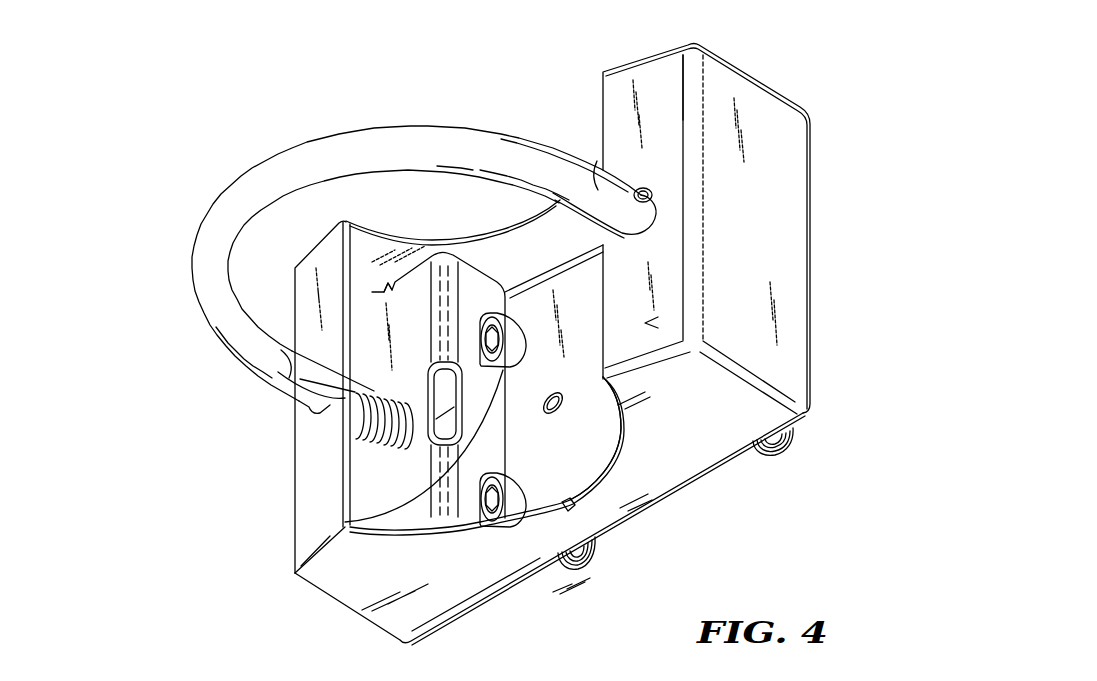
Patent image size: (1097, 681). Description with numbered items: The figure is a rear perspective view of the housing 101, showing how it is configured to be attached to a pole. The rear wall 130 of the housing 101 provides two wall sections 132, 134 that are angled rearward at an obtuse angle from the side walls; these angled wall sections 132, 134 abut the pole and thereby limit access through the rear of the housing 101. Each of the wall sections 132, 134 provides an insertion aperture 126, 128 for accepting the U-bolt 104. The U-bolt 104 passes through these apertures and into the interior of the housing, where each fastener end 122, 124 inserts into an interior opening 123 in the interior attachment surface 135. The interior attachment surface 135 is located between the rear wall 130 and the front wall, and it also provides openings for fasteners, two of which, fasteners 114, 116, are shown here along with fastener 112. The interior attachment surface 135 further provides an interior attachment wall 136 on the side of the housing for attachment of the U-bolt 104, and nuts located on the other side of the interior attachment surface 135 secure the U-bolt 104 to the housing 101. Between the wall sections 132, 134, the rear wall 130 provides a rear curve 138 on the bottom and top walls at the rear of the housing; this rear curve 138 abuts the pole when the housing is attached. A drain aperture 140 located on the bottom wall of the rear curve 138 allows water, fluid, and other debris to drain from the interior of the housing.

The housing 101 is at (655, 75).
The U-bolt 104 is at (348, 150).
The fastener 112 is at (790, 443).
The fastener 114 is at (347, 525).
The fastener 116 is at (570, 577).
The fastener end 122 is at (372, 437).
The interior opening 123 is at (386, 424).
The fastener end 124 is at (655, 205).
The insertion aperture 126 is at (497, 227).
The insertion aperture 128 is at (652, 190).
The rear wall 130 is at (650, 323).
The wall section 132 is at (667, 262).
The wall section 134 is at (303, 250).
The interior attachment surface 135 is at (405, 297).
The interior attachment wall 136 is at (405, 340).
The rear curve 138 is at (620, 453).
The drain aperture 140 is at (570, 510).